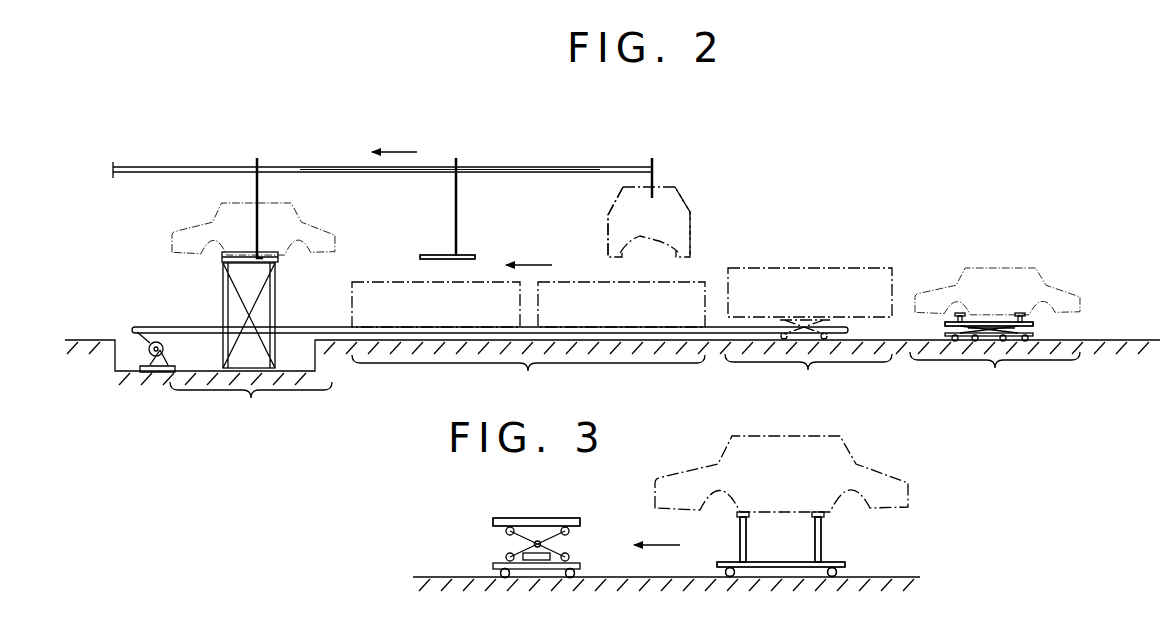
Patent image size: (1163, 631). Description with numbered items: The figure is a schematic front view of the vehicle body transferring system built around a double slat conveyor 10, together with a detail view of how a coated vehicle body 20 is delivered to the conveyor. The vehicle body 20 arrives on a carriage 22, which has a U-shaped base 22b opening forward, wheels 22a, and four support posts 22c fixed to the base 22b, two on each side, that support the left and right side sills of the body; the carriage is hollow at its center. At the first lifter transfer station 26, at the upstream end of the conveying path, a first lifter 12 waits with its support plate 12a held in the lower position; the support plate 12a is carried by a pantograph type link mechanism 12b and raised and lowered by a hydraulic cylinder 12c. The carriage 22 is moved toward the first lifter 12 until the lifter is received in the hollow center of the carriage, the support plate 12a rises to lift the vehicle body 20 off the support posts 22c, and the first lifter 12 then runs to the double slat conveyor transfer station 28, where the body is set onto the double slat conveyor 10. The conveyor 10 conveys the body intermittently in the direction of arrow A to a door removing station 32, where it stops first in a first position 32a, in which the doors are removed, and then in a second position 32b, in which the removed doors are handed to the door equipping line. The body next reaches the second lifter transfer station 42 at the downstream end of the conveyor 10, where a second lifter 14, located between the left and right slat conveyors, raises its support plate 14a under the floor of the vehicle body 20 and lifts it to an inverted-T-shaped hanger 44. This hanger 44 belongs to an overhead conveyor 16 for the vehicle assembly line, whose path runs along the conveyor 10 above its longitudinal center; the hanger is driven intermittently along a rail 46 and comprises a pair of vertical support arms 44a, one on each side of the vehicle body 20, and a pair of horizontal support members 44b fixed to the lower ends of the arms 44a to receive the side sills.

In FIG. 2, the double slat conveyor 10 is at (162, 323).
In FIG. 2, the first lifter 12 is at (1004, 320).
In FIG. 3, the first lifter 12 is at (490, 515).
In FIG. 2, the support plate 12a is at (977, 320).
In FIG. 3, the support plate 12a is at (558, 517).
In FIG. 3, the pantograph type link mechanism 12b is at (525, 534).
In FIG. 3, the hydraulic cylinder 12c is at (528, 570).
In FIG. 2, the second lifter 14 is at (218, 291).
In FIG. 2, the support plate 14a is at (238, 250).
In FIG. 2, the overhead conveyor 16 is at (195, 163).
In FIG. 2, the vehicle body 20 is at (322, 205).
In FIG. 3, the vehicle body 20 is at (857, 462).
In FIG. 2, the carriage 22 is at (1043, 329).
In FIG. 3, the carriage 22 is at (826, 532).
In FIG. 3, the wheels 22a is at (737, 578).
In FIG. 3, the U-shaped base 22b is at (846, 566).
In FIG. 3, the support posts 22c is at (815, 552).
In FIG. 2, the first lifter transfer station 26 is at (995, 378).
In FIG. 2, the double slat conveyor transfer station 28 is at (808, 363).
In FIG. 2, the door removing station 32 is at (528, 380).
In FIG. 2, the first position 32a is at (655, 317).
In FIG. 2, the second position 32b is at (470, 317).
In FIG. 2, the second lifter transfer station 42 is at (251, 410).
In FIG. 2, the inverted-T-shaped hanger 44 is at (270, 197).
In FIG. 2, the vertical support arms 44a is at (462, 209).
In FIG. 2, the horizontal support members 44b is at (438, 256).
In FIG. 2, the rail 46 is at (538, 167).
In FIG. 2, the arrow A is at (542, 265).